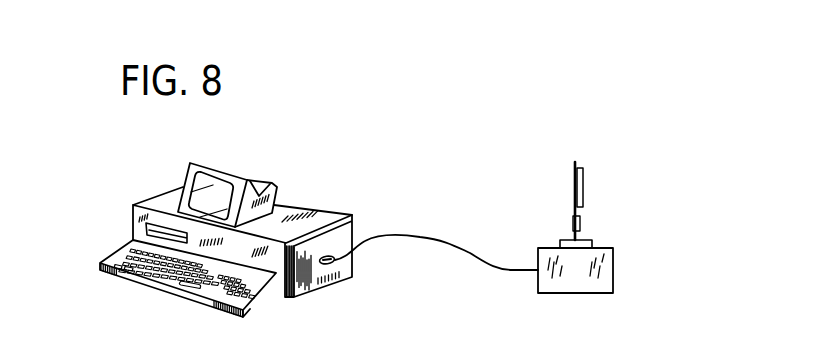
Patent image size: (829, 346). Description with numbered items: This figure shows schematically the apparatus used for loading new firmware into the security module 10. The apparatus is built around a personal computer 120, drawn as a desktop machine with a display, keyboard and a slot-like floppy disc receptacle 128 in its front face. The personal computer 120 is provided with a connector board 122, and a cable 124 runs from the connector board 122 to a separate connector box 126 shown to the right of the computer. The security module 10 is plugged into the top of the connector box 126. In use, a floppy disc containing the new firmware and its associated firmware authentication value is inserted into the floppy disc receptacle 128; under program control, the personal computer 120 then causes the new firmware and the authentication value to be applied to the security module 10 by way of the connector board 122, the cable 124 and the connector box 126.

The personal computer 120 is at (239, 220).
The connector board 122 is at (341, 229).
The floppy disc receptacle 128 is at (140, 229).
The cable 124 is at (482, 252).
The connector box 126 is at (612, 247).
The security module 10 is at (584, 182).